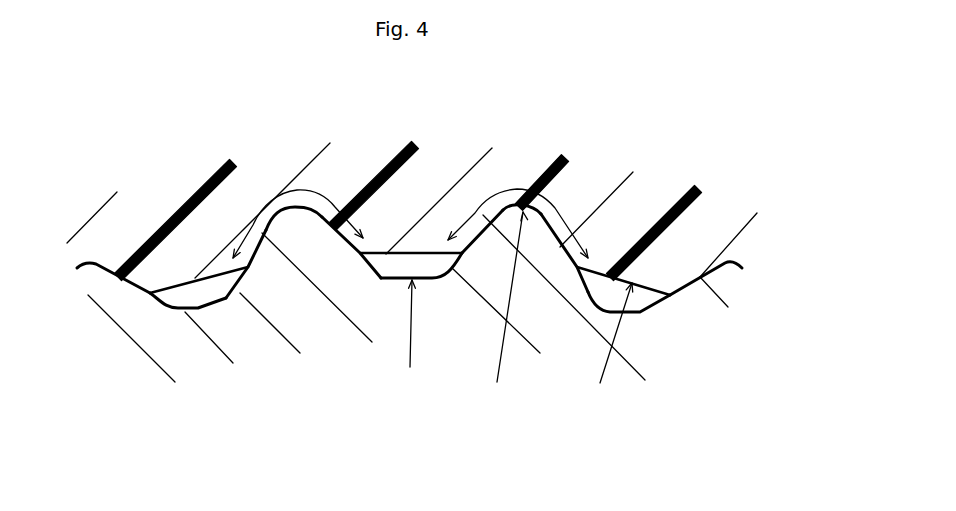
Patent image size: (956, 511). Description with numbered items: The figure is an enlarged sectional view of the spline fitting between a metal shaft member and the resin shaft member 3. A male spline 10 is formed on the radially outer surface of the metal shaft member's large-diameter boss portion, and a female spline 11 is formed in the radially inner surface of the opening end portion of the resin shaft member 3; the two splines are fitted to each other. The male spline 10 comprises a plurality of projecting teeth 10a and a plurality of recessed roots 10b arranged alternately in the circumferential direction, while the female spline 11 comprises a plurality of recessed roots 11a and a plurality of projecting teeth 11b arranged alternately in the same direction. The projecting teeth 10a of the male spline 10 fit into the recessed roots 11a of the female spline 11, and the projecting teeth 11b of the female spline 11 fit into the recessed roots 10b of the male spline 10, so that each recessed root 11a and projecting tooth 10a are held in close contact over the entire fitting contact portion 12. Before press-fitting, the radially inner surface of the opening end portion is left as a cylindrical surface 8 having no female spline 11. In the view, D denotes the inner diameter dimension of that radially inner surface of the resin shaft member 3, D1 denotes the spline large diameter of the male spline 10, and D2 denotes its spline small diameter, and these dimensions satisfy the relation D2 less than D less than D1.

The resin shaft member 3 is at (643, 235).
The cylindrical surface 8 is at (217, 277).
The male spline 10 is at (439, 260).
The projecting teeth 10a is at (297, 223).
The recessed roots 10b is at (166, 302).
The female spline 11 is at (552, 250).
The recessed roots 11a is at (257, 245).
The projecting teeth 11b is at (195, 278).
The fitting contact portion 12 is at (318, 190).
The inner diameter dimension D is at (616, 338).
The spline large diameter D1 is at (521, 297).
The spline small diameter D2 is at (427, 324).